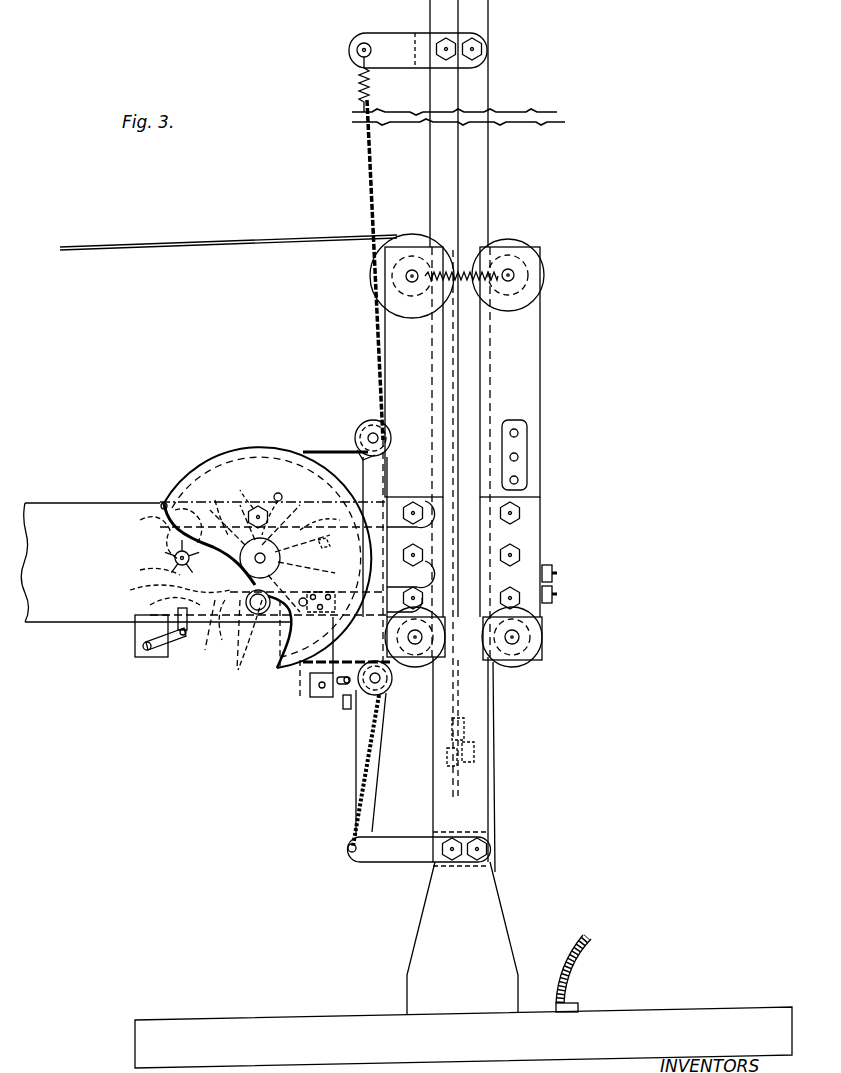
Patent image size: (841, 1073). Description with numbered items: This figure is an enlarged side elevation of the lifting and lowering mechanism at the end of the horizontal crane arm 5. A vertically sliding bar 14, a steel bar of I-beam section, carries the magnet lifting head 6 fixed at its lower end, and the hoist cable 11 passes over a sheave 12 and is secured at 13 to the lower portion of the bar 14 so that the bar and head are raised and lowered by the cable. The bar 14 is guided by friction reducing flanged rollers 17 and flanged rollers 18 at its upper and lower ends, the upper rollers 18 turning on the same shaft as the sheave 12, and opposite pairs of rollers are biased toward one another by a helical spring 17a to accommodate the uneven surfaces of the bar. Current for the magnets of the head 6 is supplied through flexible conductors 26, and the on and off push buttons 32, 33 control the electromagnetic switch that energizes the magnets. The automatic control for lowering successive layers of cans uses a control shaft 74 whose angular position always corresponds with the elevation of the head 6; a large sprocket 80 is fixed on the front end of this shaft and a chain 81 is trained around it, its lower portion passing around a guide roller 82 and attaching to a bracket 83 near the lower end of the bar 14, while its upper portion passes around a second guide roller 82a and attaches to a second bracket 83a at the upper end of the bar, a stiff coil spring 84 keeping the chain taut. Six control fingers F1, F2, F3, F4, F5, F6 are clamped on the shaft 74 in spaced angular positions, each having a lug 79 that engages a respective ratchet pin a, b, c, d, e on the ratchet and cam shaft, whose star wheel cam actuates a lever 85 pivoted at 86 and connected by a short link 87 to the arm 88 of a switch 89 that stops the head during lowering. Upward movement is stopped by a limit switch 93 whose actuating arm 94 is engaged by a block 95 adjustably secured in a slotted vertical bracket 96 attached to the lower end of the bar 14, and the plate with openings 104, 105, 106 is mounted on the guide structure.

The crane arm 5 is at (55, 510).
The magnet lifting head 6 is at (240, 1023).
The hoist cable 11 is at (233, 245).
The sheave 12 is at (405, 240).
The cable attachment point 13 is at (468, 745).
The vertically sliding bar 14 is at (487, 168).
The flanged rollers 17 is at (518, 246).
The helical spring 17a is at (470, 268).
The flanged rollers 18 is at (535, 272).
The flexible conductors 26 is at (590, 948).
The on push button 32 is at (556, 572).
The off push button 33 is at (556, 594).
The control shaft 74 is at (268, 560).
The lugs 79 is at (228, 500).
The sprocket 80 is at (233, 447).
The chain 81 is at (300, 680).
The guide roller 82 is at (380, 698).
The second guide roller 82a is at (362, 425).
The bracket 83 is at (390, 860).
The second bracket 83a is at (358, 38).
The coil spring 84 is at (358, 83).
The lever 85 is at (219, 627).
The pivot 86 is at (258, 615).
The link 87 is at (150, 627).
The switch arm 88 is at (182, 640).
The switch 89 is at (158, 658).
The limit switch 93 is at (318, 698).
The actuating arm 94 is at (340, 690).
The block 95 is at (345, 703).
The slotted vertical bracket 96 is at (362, 772).
The hole 104 is at (518, 433).
The hole 105 is at (518, 457).
The hole 106 is at (518, 480).
The ratchet pin a is at (188, 513).
The ratchet pin b is at (162, 503).
The ratchet pin c is at (150, 545).
The ratchet pin d is at (140, 570).
The ratchet pin e is at (130, 590).
The control finger F1 is at (150, 603).
The control finger F2 is at (244, 647).
The control finger F3 is at (328, 590).
The control finger F4 is at (321, 528).
The control finger F5 is at (290, 504).
The control finger F6 is at (254, 503).